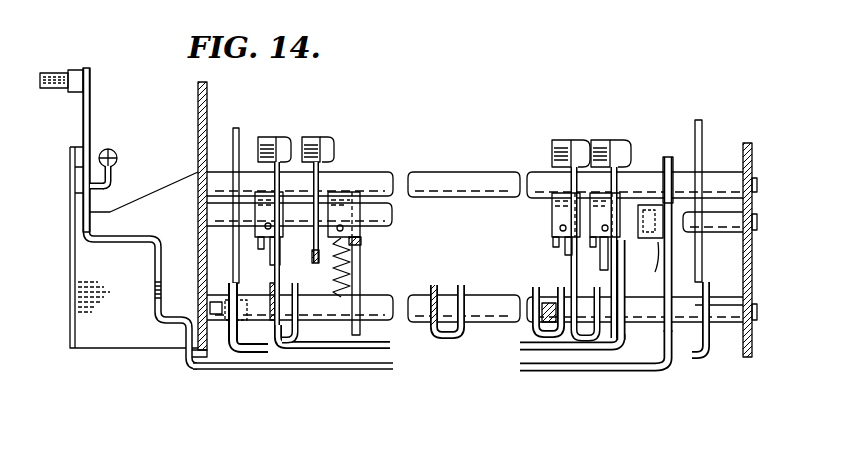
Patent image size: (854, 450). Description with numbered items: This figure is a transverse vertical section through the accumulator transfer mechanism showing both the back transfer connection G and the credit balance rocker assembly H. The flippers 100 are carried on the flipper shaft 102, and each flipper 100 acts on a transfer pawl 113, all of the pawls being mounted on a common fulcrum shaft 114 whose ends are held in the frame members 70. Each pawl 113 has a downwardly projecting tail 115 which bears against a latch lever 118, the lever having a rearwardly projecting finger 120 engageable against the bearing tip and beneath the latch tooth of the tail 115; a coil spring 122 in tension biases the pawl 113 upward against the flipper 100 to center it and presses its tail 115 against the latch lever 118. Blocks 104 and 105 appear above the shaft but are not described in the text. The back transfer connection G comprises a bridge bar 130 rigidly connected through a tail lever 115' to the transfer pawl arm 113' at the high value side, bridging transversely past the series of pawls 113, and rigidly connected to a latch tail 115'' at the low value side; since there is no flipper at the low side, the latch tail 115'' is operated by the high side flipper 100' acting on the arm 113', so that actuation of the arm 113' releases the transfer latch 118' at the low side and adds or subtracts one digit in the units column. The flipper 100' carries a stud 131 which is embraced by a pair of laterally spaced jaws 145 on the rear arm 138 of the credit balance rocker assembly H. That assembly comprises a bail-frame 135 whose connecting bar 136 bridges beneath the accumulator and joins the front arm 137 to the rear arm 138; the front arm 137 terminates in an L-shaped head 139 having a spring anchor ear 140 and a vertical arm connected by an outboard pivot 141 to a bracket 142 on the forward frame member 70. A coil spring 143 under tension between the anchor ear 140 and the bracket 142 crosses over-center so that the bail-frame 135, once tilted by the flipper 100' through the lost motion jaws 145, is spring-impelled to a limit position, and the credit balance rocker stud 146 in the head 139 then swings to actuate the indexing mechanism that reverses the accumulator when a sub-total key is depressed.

The frame member 70 is at (752, 148).
The flipper 100 is at (387, 171).
The high side flipper 100' is at (635, 165).
The flipper shaft 102 is at (482, 170).
The contact block 104 is at (266, 135).
The contact block 105 is at (328, 142).
The transfer pawl 113 is at (534, 224).
The transfer pawl arm 113' is at (627, 223).
The fulcrum shaft 114 is at (390, 215).
The tail 115 is at (381, 286).
The tail lever 115' is at (643, 298).
The latch tail 115'' is at (263, 278).
The latch lever 118 is at (496, 312).
The transfer latch 118' is at (269, 346).
The finger 120 is at (545, 312).
The coil spring 122 is at (352, 272).
The bridge bar 130 is at (338, 347).
The stud 131 is at (630, 240).
The bail-frame 135 is at (657, 375).
The connecting bar 136 is at (205, 373).
The arm 137 is at (155, 277).
The rear arm 138 is at (672, 158).
The head 139 is at (91, 113).
The spring anchor ear 140 is at (117, 173).
The outboard pivot 141 is at (90, 190).
The bracket 142 is at (108, 352).
The coil spring 143 is at (118, 153).
The jaws 145 is at (651, 266).
The credit balance rocker stud 146 is at (50, 77).
The back transfer connection G is at (373, 348).
The credit balance rocker assembly H is at (243, 372).